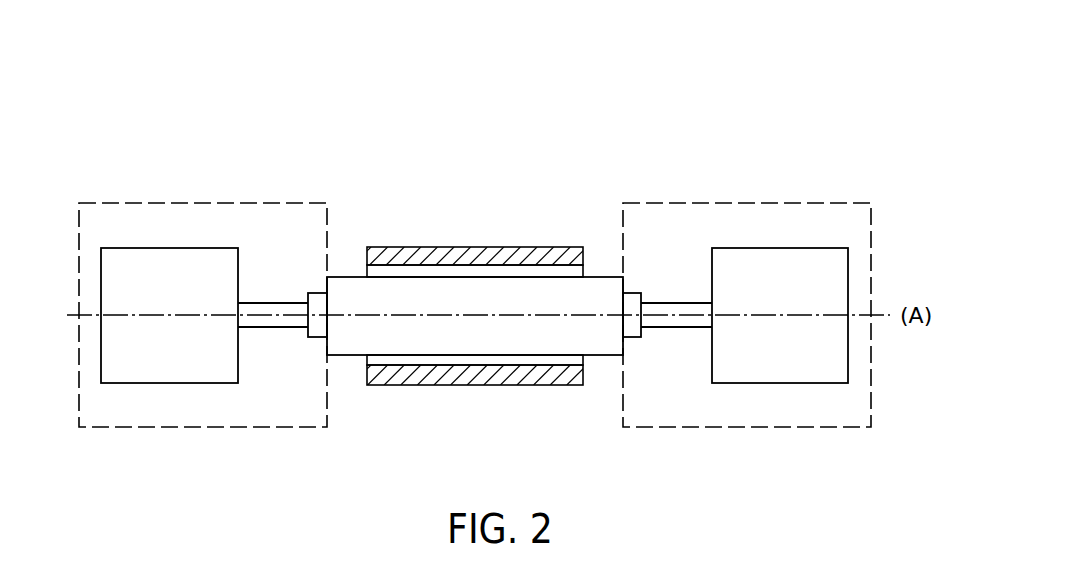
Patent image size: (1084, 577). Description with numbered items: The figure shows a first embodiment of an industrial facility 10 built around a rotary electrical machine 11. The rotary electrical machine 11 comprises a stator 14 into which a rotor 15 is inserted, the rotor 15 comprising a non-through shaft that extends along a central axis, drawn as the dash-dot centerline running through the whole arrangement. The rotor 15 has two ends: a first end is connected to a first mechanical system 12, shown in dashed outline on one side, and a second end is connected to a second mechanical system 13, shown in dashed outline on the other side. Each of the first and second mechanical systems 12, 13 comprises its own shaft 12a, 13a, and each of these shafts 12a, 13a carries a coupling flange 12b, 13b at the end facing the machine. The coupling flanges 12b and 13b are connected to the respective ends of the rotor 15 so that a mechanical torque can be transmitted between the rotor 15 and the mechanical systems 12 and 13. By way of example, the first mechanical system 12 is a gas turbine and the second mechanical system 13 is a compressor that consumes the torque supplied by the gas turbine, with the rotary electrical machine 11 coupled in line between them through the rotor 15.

The industrial facility 10 is at (758, 62).
The rotary electrical machine 11 is at (463, 225).
The first mechanical system 12 is at (743, 186).
The shaft 12a is at (673, 320).
The coupling flange 12b is at (633, 300).
The second mechanical system 13 is at (220, 184).
The shaft 13a is at (275, 322).
The coupling flange 13b is at (317, 300).
The stator 14 is at (533, 375).
The rotor 15 is at (427, 337).